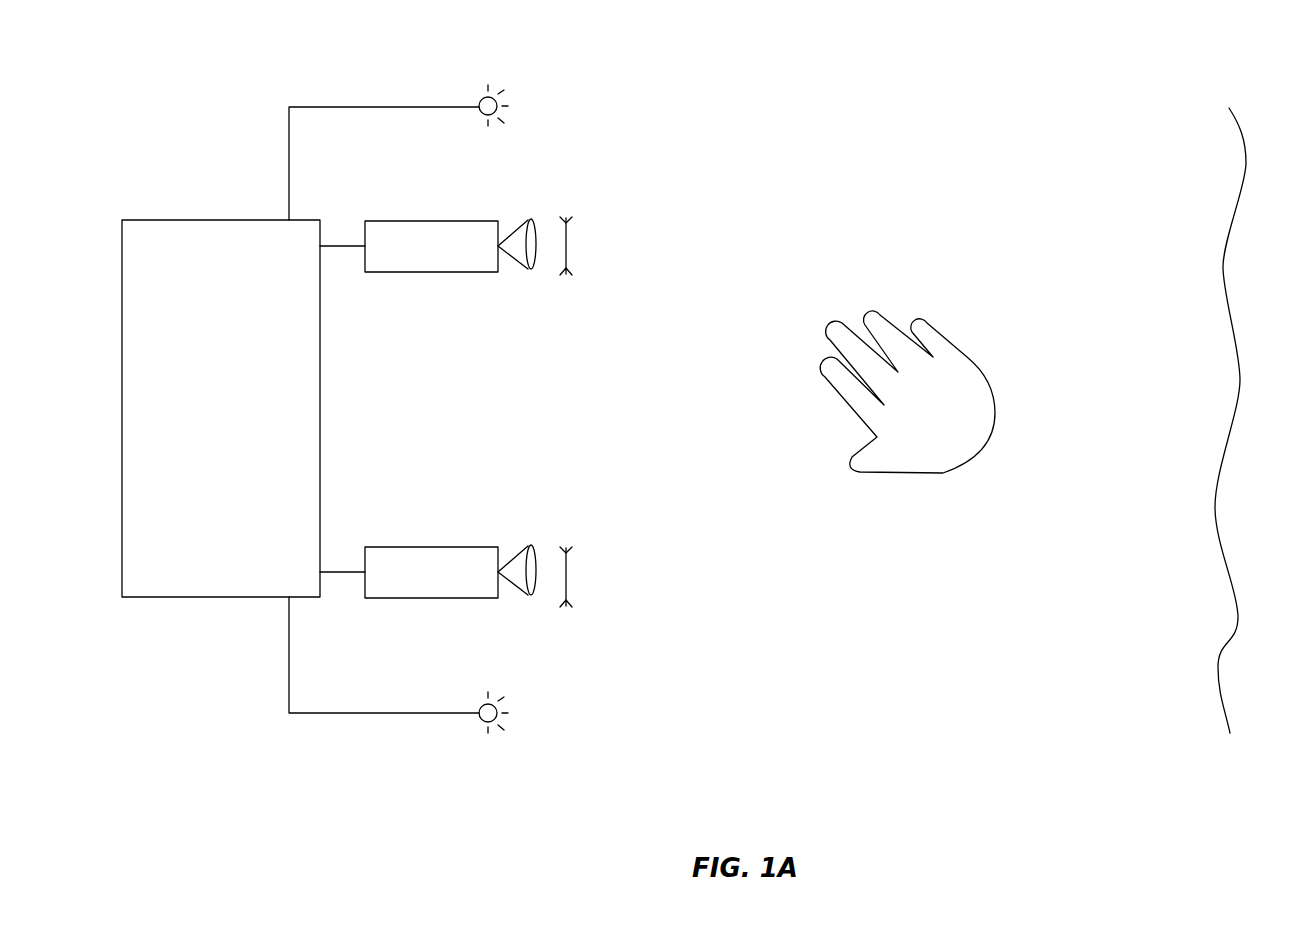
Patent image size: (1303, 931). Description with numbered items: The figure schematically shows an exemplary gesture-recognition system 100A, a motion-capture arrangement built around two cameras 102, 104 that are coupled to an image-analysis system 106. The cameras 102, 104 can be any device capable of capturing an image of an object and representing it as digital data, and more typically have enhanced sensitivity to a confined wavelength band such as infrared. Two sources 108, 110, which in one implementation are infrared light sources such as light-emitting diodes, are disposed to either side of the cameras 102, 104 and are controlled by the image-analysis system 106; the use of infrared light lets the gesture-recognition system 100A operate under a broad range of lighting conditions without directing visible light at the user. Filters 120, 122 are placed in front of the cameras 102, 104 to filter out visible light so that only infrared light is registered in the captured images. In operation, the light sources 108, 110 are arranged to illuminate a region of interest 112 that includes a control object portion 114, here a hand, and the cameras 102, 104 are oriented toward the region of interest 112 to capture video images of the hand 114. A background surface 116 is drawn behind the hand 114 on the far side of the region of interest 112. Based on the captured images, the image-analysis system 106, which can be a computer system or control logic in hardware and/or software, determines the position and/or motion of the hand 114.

The gesture-recognition system 100A is at (1258, 51).
The camera 102 is at (430, 221).
The camera 104 is at (430, 547).
The image-analysis system 106 is at (197, 220).
The light source 108 is at (480, 113).
The light source 110 is at (480, 720).
The region of interest 112 is at (797, 573).
The control object portion 114 is at (963, 358).
The background surface 116 is at (1229, 342).
The filter 120 is at (569, 250).
The filter 122 is at (569, 580).